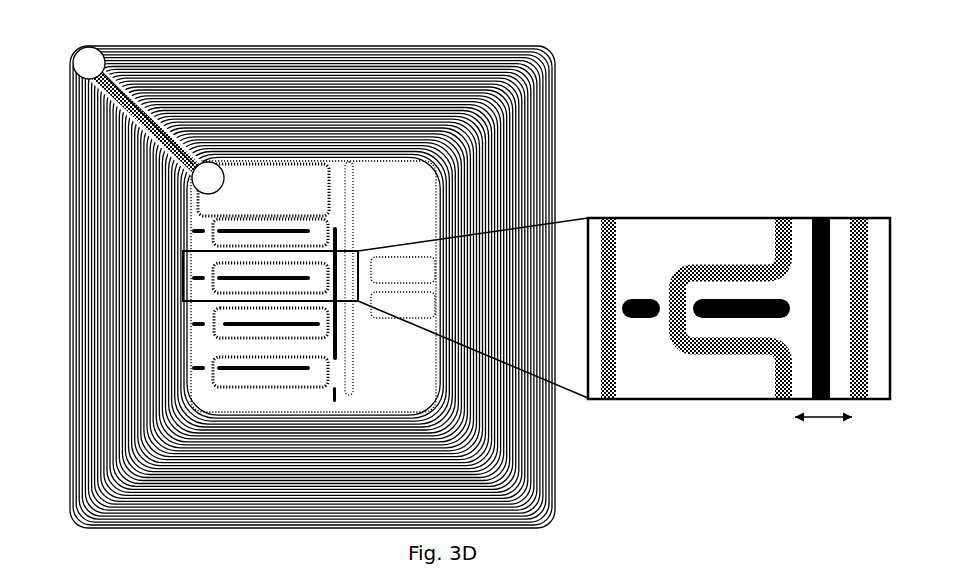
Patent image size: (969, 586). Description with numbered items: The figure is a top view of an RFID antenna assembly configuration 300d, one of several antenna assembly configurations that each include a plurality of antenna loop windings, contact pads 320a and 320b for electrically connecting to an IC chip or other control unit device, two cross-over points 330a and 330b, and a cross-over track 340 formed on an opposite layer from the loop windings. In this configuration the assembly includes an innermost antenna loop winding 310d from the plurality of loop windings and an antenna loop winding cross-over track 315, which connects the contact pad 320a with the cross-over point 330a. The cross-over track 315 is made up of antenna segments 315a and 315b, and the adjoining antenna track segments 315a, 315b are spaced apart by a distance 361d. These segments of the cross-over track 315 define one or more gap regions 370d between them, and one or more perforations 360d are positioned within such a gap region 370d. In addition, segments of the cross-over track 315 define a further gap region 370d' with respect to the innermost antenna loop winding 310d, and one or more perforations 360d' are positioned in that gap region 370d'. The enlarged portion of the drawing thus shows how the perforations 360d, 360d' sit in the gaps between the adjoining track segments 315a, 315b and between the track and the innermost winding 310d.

The RFID antenna assembly configuration 300d is at (312, 287).
The innermost antenna loop winding 310d is at (608, 218).
The antenna loop winding cross-over track 315 is at (354, 206).
The antenna segment 315a is at (784, 218).
The antenna segment 315b is at (858, 218).
The contact pad 320a is at (403, 270).
The contact pad 320b is at (403, 305).
The cross-over point 330a is at (226, 182).
The cross-over point 330b is at (76, 56).
The cross-over track 340 is at (100, 97).
The perforation 360d is at (782, 273).
The perforation 360d' is at (650, 338).
The gap region 370d is at (760, 263).
The gap region 370d' is at (655, 261).
The distance 361d is at (826, 425).